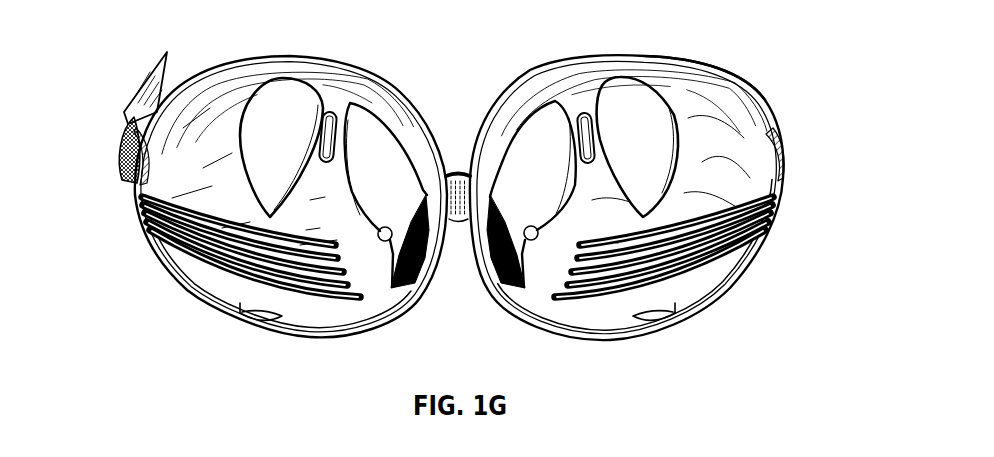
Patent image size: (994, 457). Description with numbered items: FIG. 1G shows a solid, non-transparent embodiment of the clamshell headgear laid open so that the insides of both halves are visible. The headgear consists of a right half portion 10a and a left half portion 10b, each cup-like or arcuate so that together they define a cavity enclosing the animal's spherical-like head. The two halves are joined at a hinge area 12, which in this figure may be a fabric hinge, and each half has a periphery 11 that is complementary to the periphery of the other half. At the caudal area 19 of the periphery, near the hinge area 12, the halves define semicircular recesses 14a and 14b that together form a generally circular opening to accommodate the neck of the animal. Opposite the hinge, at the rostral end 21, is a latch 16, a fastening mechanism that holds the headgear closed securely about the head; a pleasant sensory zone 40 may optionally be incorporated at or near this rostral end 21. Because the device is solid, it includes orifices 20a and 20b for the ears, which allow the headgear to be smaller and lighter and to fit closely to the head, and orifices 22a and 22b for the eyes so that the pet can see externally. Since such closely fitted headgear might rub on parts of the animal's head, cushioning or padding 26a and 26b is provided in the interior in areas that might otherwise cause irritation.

The right half portion 10a is at (194, 299).
The left half portion 10b is at (725, 299).
The periphery 11 is at (666, 60).
The hinge area 12 is at (456, 175).
The right semicircular recess 14a is at (282, 336).
The left semicircular recess 14b is at (650, 333).
The latch 16 is at (143, 105).
The caudal area 19 is at (497, 298).
The right ear orifice 20a is at (393, 256).
The left ear orifice 20b is at (524, 256).
The rostral end 21 is at (122, 168).
The right eye orifice 22a is at (246, 116).
The left eye orifice 22b is at (662, 102).
The right padding 26a is at (330, 110).
The left padding 26b is at (583, 112).
The pleasant sensory zone 40 is at (150, 170).